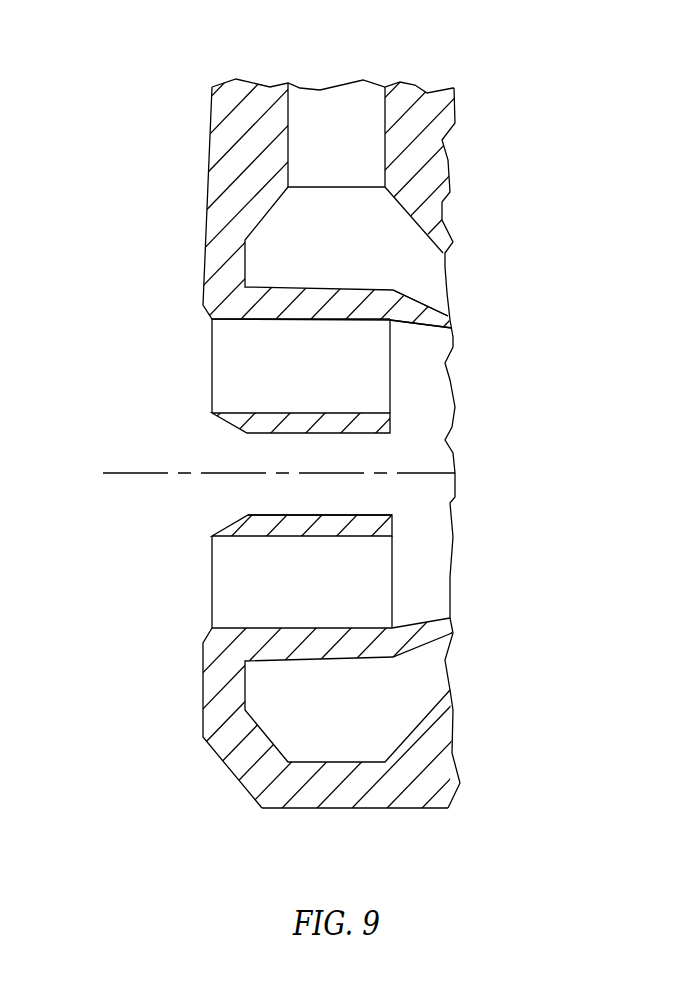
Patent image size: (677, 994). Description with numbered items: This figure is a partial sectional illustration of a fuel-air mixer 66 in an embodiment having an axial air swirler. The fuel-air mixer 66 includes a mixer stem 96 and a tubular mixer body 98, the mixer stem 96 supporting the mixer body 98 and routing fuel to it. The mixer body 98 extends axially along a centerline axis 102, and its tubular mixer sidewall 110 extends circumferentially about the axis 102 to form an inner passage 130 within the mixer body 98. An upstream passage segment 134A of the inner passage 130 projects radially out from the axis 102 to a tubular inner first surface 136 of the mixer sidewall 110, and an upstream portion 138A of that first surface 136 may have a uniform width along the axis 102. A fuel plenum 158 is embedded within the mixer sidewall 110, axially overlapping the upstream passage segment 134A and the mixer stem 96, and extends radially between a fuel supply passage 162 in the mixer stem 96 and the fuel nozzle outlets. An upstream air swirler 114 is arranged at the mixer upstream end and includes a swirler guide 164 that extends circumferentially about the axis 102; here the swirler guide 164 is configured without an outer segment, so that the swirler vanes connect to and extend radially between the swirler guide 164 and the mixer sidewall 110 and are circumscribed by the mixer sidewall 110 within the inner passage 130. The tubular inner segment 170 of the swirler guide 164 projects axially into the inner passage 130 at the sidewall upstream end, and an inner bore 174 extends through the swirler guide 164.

The fuel-air mixer 66 is at (338, 459).
The mixer stem 96 is at (192, 109).
The mixer body 98 is at (213, 826).
The centerline axis 102 is at (108, 473).
The mixer sidewall 110 is at (412, 822).
The upstream air swirler 114 is at (170, 388).
The inner passage 130 is at (509, 448).
The upstream passage segment 134A is at (430, 454).
The inner first surface 136 is at (422, 330).
The upstream portion of the first surface 138A is at (277, 320).
The fuel plenum 158 is at (358, 249).
The fuel supply passage 162 is at (317, 100).
The swirler guide 164 is at (407, 523).
The inner segment 170 is at (297, 514).
The inner bore 174 is at (222, 498).